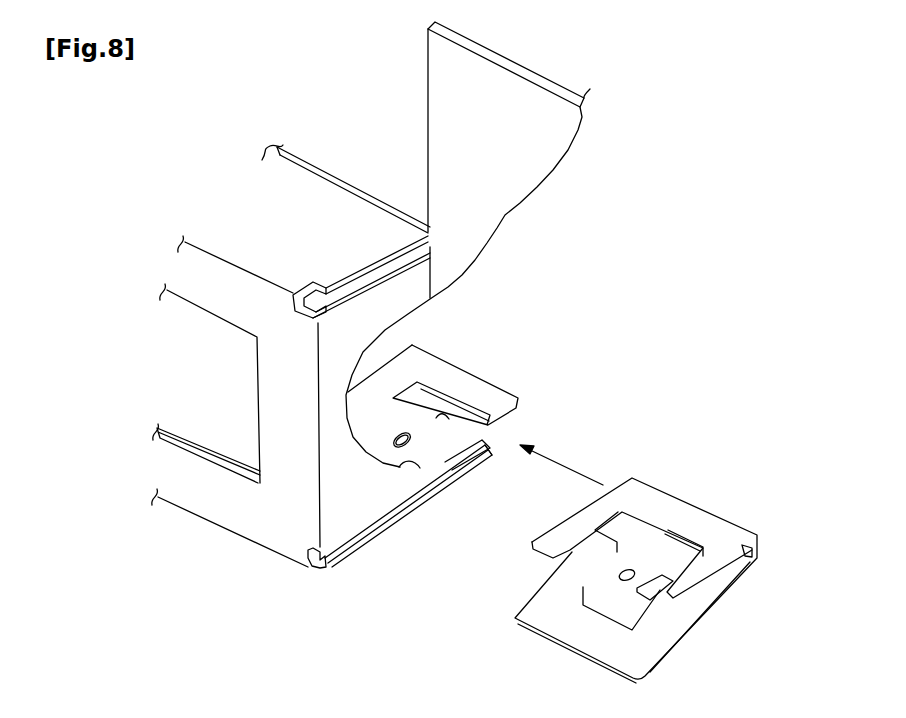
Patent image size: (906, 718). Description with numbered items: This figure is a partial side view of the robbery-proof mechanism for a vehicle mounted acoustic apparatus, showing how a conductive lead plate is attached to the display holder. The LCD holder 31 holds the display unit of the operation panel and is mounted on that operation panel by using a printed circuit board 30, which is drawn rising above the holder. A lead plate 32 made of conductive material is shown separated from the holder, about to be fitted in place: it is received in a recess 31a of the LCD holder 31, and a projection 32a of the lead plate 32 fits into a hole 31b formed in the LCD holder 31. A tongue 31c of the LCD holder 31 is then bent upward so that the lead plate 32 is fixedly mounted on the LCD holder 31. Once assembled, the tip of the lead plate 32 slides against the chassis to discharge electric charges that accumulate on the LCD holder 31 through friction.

The printed circuit board 30 is at (538, 65).
The LCD holder 31 is at (487, 374).
The recess 31a is at (440, 417).
The hole 31b is at (412, 437).
The tongue 31c is at (489, 457).
The lead plate 32 is at (647, 533).
The projection 32a is at (632, 571).